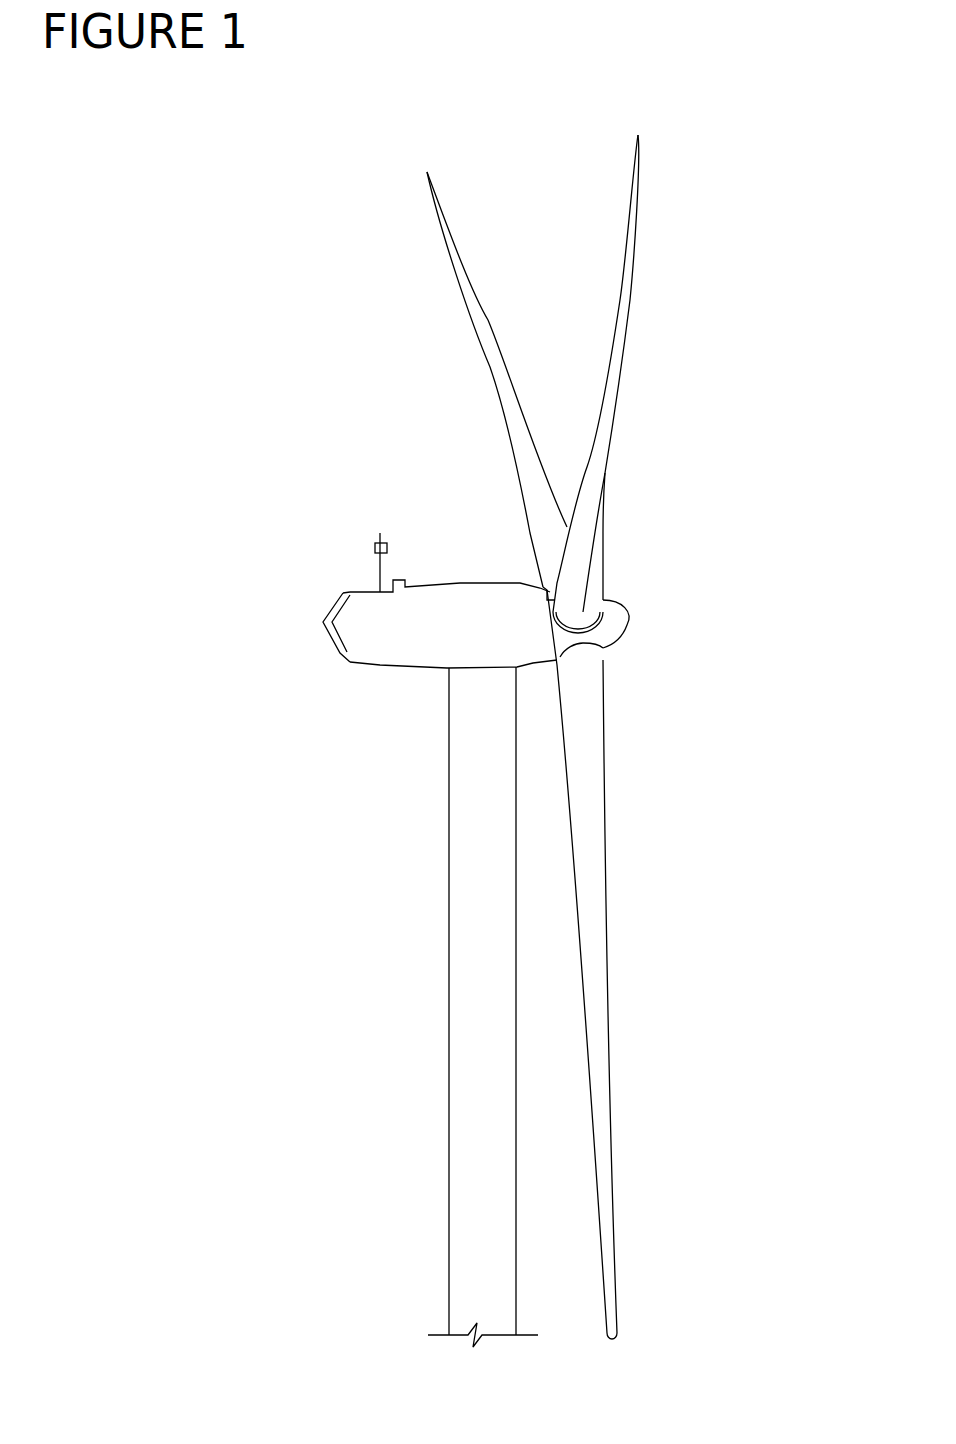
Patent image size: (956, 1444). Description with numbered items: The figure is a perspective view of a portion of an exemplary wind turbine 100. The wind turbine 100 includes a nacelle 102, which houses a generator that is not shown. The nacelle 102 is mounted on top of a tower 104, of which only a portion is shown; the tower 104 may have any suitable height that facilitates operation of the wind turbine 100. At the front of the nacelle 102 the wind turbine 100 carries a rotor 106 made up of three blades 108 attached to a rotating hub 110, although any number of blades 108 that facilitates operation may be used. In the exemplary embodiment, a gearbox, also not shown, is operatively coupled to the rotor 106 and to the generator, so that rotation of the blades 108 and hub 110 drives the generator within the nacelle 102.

The wind turbine 100 is at (313, 222).
The nacelle 102 is at (378, 667).
The tower 104 is at (448, 953).
The rotor 106 is at (632, 737).
The blades 108 is at (467, 260).
The rotating hub 110 is at (623, 636).